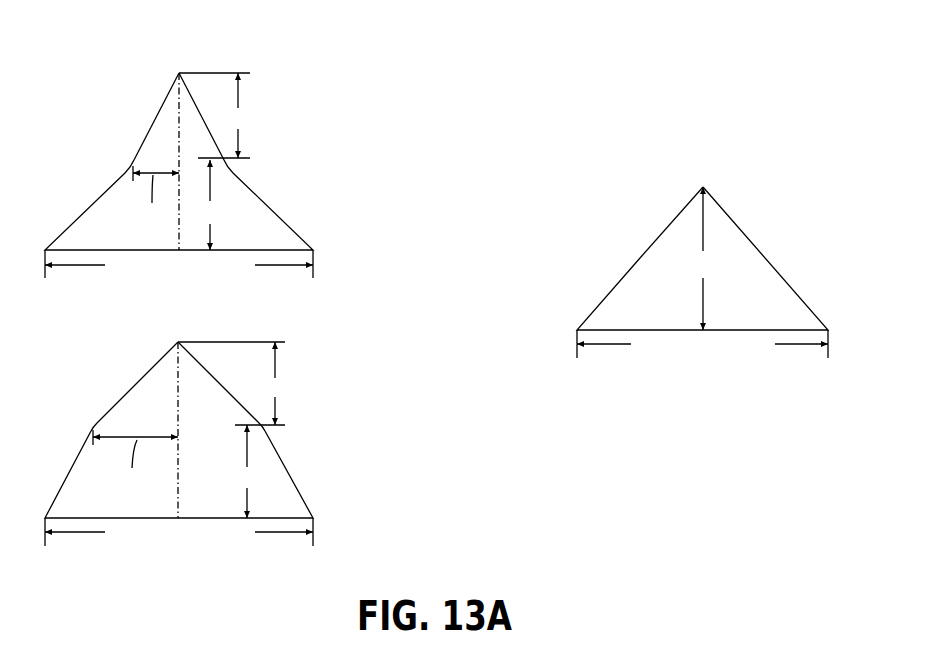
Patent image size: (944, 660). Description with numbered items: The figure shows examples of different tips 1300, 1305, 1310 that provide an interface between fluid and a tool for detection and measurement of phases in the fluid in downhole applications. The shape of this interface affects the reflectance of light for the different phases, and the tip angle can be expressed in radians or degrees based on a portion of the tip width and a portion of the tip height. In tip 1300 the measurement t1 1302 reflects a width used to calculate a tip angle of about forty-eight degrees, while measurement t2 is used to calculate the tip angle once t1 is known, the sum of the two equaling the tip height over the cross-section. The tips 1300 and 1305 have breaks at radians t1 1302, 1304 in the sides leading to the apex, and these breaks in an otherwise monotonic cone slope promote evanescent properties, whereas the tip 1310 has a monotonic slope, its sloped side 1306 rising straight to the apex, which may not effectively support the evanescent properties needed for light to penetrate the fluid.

The tip 1300 is at (315, 82).
The t1 break 1302 is at (140, 148).
The tip 1305 is at (320, 372).
The t1 break 1304 is at (123, 422).
The tip 1310 is at (750, 165).
The sloped side of triangular tip profile 1310 1306 is at (678, 215).